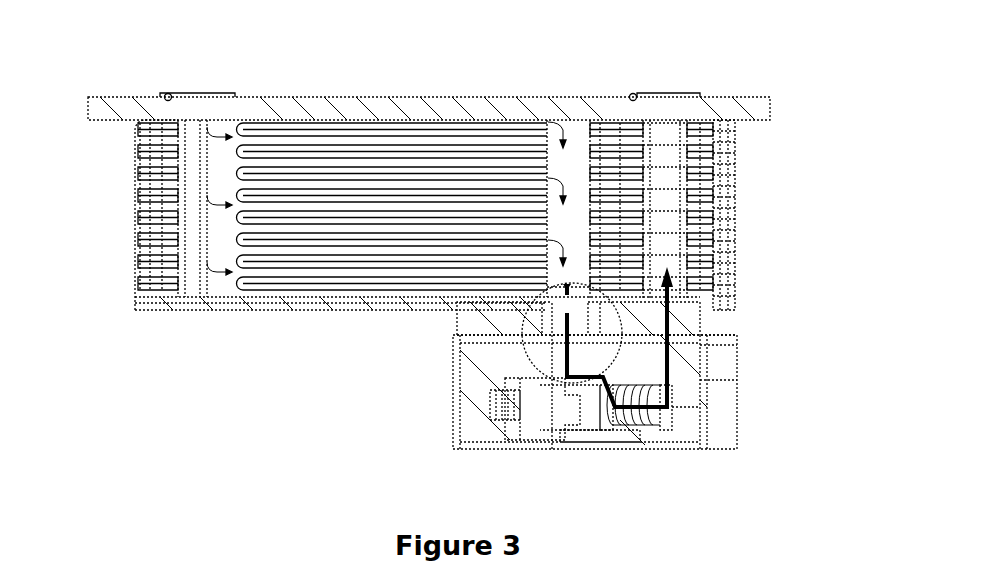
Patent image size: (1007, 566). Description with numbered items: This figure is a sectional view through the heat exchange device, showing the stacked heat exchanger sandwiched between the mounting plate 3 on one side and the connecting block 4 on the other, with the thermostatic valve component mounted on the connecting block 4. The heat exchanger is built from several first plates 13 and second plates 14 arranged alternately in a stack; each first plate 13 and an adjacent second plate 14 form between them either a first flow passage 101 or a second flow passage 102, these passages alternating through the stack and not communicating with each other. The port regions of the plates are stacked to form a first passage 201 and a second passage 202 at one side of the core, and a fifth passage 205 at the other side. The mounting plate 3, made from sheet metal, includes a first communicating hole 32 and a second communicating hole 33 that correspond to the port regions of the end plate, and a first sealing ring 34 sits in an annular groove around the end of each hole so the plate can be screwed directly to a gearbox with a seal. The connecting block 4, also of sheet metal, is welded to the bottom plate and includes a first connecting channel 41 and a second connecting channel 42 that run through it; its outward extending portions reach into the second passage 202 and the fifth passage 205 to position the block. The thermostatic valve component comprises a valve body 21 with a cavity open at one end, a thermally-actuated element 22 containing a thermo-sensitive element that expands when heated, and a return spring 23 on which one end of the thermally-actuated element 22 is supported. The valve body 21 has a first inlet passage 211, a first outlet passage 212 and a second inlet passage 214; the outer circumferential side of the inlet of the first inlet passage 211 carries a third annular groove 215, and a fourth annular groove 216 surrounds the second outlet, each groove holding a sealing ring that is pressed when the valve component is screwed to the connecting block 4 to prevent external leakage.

The mounting plate 3 is at (105, 110).
The first sealing ring 34 is at (166, 94).
The first communicating hole 32 is at (192, 107).
The second communicating hole 33 is at (660, 100).
The second plate 14 is at (146, 174).
The first plate 13 is at (150, 232).
The first passage 201 is at (195, 270).
The second passage 202 is at (565, 130).
The fifth passage 205 is at (672, 213).
The first flow passage 101 is at (310, 290).
The second flow passage 102 is at (352, 287).
The connecting block 4 is at (497, 315).
The valve body 21 is at (525, 447).
The first connecting channel 41 is at (550, 353).
The first inlet passage 211 is at (535, 375).
The third annular groove 215 is at (592, 440).
The thermally-actuated element 22 is at (620, 425).
The return spring 23 is at (645, 423).
The second connecting channel 42 is at (720, 292).
The fourth annular groove 216 is at (680, 335).
The first outlet passage 212 is at (710, 347).
The second inlet passage 214 is at (672, 407).